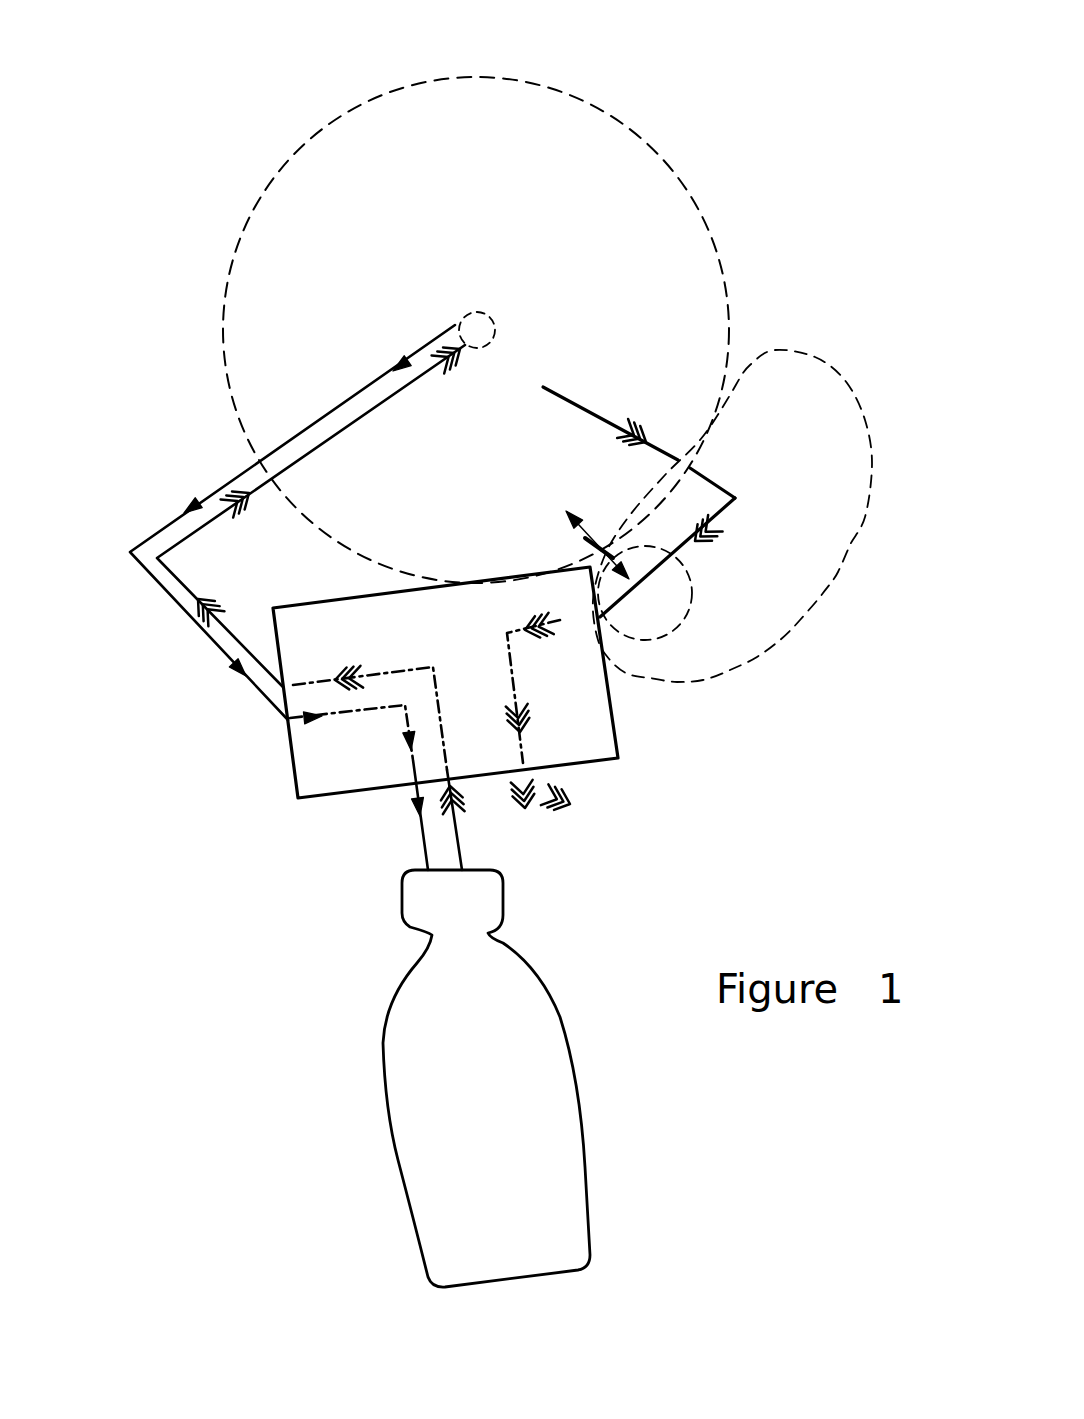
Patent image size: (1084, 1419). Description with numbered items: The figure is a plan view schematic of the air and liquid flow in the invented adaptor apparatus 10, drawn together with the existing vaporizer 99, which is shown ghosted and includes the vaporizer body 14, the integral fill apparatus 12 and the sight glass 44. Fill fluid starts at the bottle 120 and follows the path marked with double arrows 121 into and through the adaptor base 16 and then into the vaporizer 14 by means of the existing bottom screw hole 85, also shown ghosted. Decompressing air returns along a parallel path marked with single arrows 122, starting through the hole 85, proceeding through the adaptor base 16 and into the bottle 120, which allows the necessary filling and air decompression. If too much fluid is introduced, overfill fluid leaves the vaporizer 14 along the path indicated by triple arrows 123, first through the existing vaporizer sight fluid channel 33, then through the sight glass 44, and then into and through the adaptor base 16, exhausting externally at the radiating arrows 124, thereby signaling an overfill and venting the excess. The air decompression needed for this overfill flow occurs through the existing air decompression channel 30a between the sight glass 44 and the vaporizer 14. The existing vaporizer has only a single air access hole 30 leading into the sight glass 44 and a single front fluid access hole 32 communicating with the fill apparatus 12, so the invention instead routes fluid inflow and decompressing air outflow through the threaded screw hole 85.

The adaptor apparatus 10 is at (165, 750).
The fill apparatus 12 is at (890, 453).
The vaporizer body 14 is at (305, 140).
The adaptor base 16 is at (472, 647).
The air access hole 30 is at (588, 553).
The air decompression channel 30a is at (608, 556).
The front fluid access hole 32 is at (700, 465).
The vaporizer sight fluid channel 33 is at (740, 500).
The sight glass 44 is at (666, 630).
The bottom screw hole 85 is at (480, 312).
The existing vaporizer 99 is at (805, 215).
The bottle 120 is at (508, 1025).
The fill fluid path 121 is at (198, 533).
The air return path 122 is at (133, 548).
The overfill fluid path 123 is at (592, 410).
The external exhaust 124 is at (580, 800).